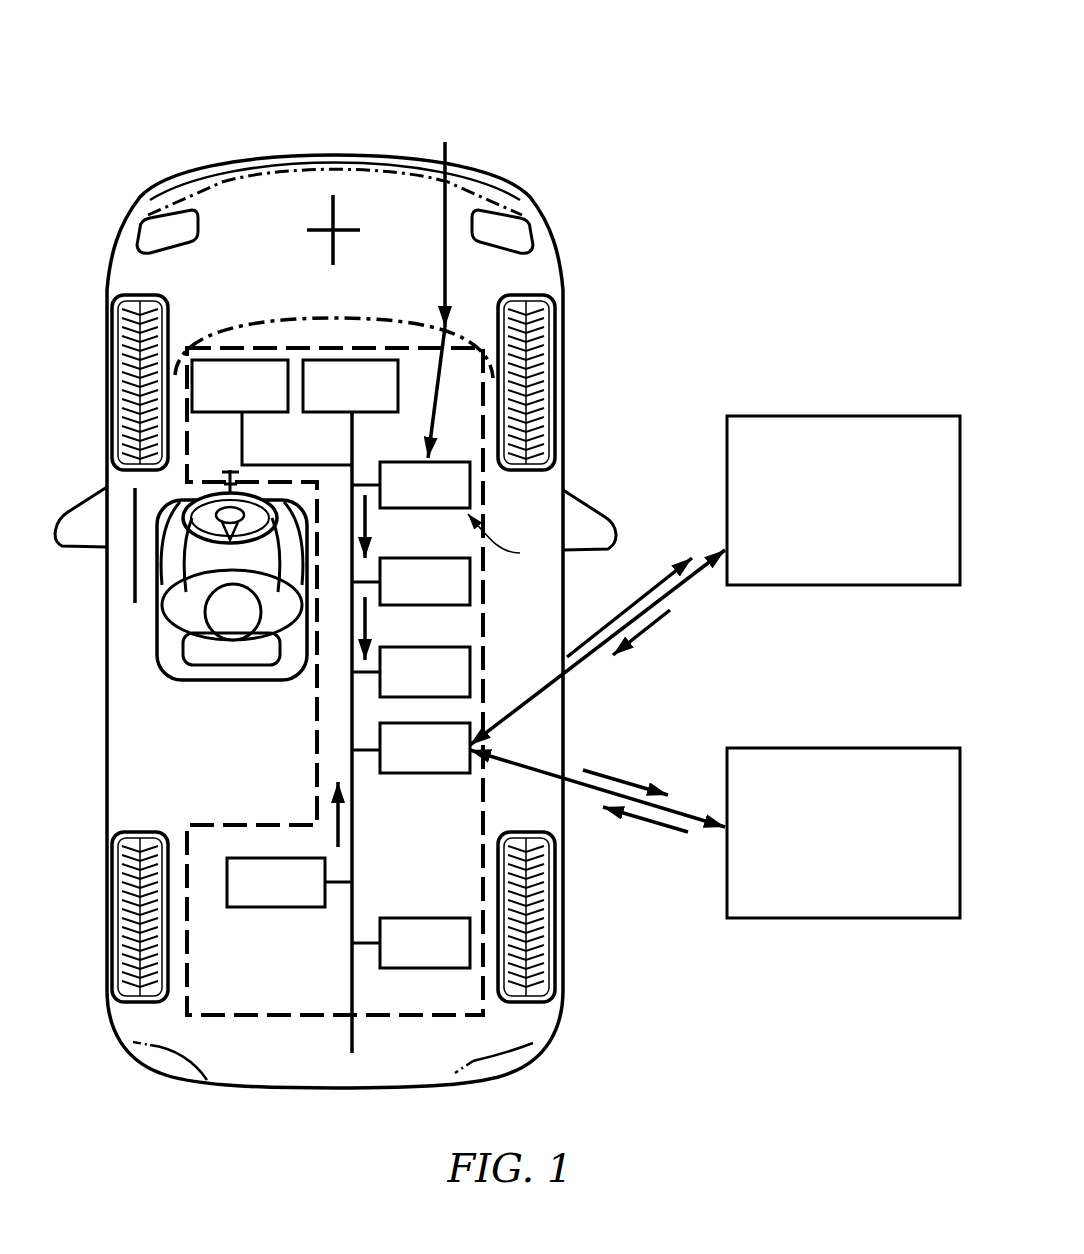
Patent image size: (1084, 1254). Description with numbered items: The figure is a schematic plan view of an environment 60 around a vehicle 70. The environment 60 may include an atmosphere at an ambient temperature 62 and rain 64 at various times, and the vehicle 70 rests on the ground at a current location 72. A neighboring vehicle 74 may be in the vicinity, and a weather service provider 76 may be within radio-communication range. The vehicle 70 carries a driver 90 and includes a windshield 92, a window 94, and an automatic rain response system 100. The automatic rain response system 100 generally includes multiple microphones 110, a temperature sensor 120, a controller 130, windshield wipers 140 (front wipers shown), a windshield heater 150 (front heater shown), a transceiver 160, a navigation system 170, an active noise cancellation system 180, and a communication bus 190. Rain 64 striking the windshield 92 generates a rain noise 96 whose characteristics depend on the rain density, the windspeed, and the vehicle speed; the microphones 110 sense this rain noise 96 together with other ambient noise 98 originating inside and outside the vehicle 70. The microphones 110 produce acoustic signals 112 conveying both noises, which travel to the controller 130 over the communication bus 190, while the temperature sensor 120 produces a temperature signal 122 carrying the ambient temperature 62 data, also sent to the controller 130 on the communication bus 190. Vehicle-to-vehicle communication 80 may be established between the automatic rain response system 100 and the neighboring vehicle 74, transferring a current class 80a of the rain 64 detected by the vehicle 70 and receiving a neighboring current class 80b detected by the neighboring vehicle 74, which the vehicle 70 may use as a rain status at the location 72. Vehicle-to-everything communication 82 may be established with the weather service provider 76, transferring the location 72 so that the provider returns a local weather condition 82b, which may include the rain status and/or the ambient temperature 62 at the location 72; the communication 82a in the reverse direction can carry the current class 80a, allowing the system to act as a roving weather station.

The environment 60 is at (271, 84).
The ambient temperature 62 is at (71, 199).
The rain 64 is at (446, 157).
The vehicle 70 is at (242, 162).
The current location 72 is at (328, 238).
The neighboring vehicle 74 is at (800, 748).
The weather service provider 76 is at (800, 416).
The vehicle-to-vehicle communication 80 is at (582, 788).
The current class 80a is at (590, 635).
The neighboring current class 80b is at (652, 823).
The vehicle-to-everything communication 82 is at (597, 652).
The outgoing signal of second link 82a is at (662, 572).
The local weather condition 82b is at (652, 628).
The driver 90 is at (178, 613).
The windshield 92 is at (362, 318).
The window 94 is at (130, 550).
The rain noise 96 is at (425, 413).
The ambient noise 98 is at (507, 541).
The automatic rain response system 100 is at (288, 1016).
The microphones 110 is at (406, 499).
The acoustic signals 112 is at (368, 522).
The temperature sensor 120 is at (406, 596).
The temperature signal 122 is at (368, 610).
The controller 130 is at (406, 686).
The windshield wipers 140 is at (221, 400).
The windshield heater 150 is at (331, 400).
The transceiver 160 is at (406, 762).
The navigation system 170 is at (257, 896).
The active noise cancellation system 180 is at (406, 957).
The communication bus 190 is at (351, 987).